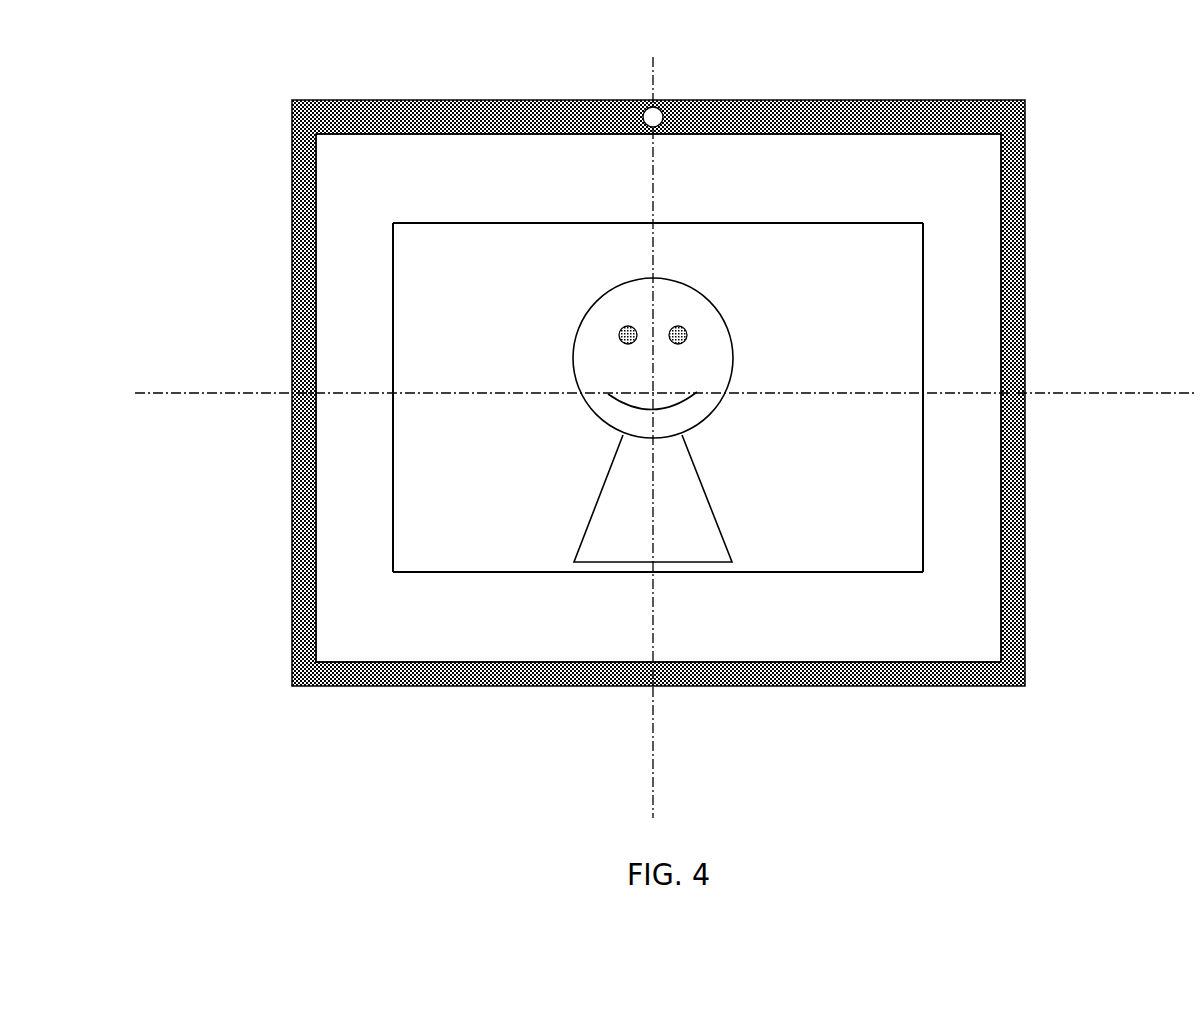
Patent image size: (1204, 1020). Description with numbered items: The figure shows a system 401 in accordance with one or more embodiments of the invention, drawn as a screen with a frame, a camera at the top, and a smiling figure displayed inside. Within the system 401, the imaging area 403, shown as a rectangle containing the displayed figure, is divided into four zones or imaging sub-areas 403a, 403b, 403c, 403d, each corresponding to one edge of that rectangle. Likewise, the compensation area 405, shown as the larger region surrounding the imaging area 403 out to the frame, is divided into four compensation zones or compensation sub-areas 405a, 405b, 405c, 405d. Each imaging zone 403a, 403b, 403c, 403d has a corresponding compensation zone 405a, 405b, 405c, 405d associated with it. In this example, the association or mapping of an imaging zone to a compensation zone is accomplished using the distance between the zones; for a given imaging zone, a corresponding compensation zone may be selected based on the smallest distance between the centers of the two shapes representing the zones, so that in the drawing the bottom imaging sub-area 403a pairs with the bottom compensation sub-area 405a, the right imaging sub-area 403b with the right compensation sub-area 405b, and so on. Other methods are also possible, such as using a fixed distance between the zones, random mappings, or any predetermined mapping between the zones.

The display device 401 is at (682, 399).
The imaging area 403 is at (645, 496).
The imaging sub-area 403a is at (823, 494).
The imaging sub-area 403b is at (822, 325).
The imaging sub-area 403c is at (461, 326).
The imaging sub-area 403d is at (461, 494).
The compensation area 405 is at (651, 438).
The compensation sub-area 405a is at (933, 617).
The compensation sub-area 405b is at (934, 179).
The compensation sub-area 405c is at (372, 178).
The compensation sub-area 405d is at (372, 618).